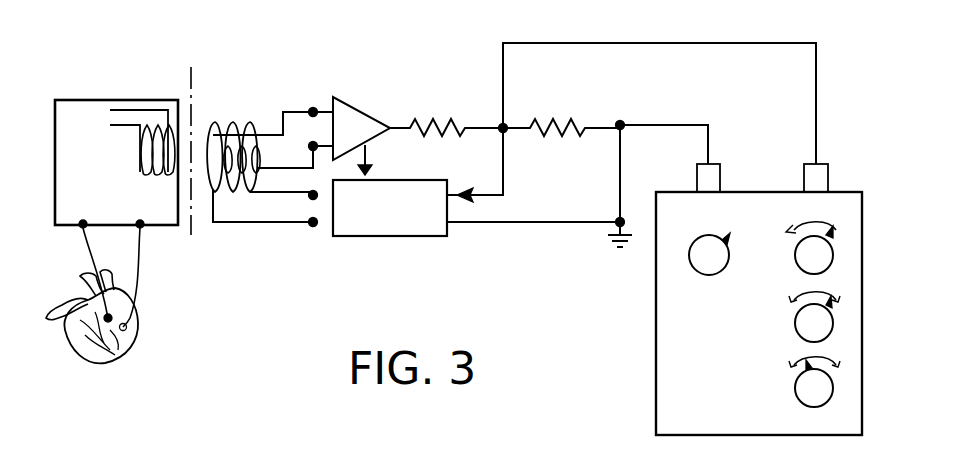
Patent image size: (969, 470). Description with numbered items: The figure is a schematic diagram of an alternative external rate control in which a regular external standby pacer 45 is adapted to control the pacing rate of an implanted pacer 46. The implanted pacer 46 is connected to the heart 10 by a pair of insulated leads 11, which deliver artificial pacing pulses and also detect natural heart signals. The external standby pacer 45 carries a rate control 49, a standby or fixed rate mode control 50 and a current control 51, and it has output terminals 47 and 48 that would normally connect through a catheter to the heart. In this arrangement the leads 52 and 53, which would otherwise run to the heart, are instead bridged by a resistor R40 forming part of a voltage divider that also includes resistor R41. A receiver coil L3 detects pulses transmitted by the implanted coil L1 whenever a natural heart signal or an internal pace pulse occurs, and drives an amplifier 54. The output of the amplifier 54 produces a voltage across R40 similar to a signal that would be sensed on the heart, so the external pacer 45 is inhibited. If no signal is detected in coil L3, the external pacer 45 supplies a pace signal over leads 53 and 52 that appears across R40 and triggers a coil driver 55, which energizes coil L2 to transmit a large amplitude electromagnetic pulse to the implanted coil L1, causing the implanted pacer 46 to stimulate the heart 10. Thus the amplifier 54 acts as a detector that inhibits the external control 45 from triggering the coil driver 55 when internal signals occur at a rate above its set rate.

The heart 10 is at (137, 352).
The insulated leads 11 is at (149, 282).
The implanted pacer 46 is at (93, 100).
The implanted coil L1 is at (159, 104).
The coil L2 is at (228, 130).
The receiver coil L3 is at (270, 145).
The amplifier 54 is at (353, 104).
The resistor R41 is at (437, 130).
The resistor R40 is at (572, 128).
The coil driver 55 is at (404, 238).
The lead 53 is at (658, 50).
The lead 52 is at (662, 125).
The output terminal 48 is at (720, 178).
The output terminal 47 is at (828, 178).
The external standby pacer 45 is at (775, 289).
The rate control 49 is at (833, 265).
The standby or fixed rate mode control 50 is at (833, 333).
The current control 51 is at (833, 395).